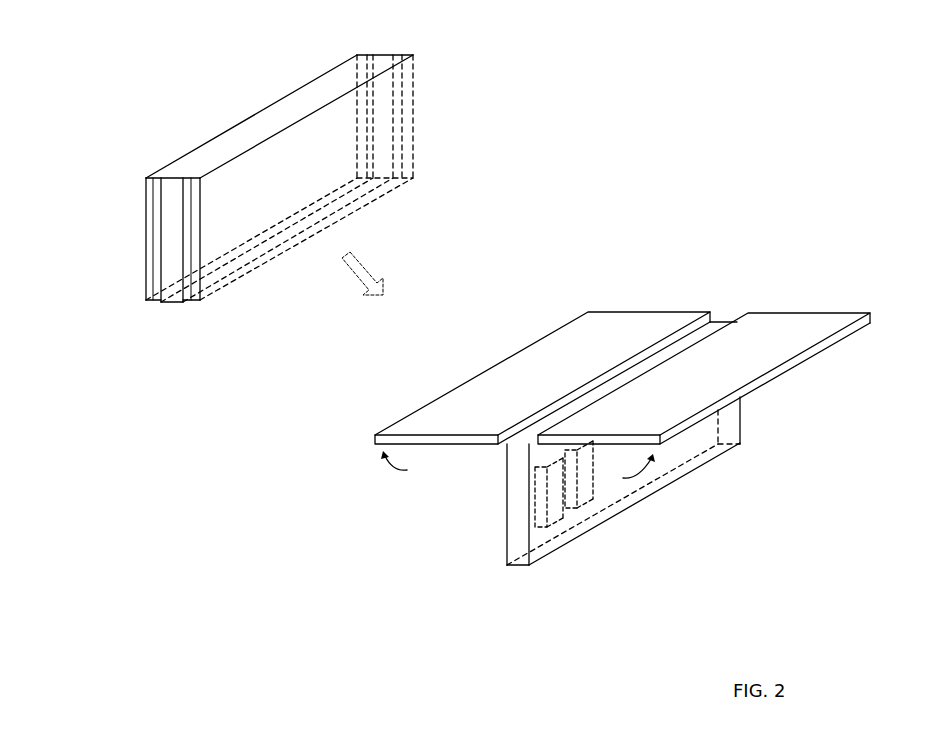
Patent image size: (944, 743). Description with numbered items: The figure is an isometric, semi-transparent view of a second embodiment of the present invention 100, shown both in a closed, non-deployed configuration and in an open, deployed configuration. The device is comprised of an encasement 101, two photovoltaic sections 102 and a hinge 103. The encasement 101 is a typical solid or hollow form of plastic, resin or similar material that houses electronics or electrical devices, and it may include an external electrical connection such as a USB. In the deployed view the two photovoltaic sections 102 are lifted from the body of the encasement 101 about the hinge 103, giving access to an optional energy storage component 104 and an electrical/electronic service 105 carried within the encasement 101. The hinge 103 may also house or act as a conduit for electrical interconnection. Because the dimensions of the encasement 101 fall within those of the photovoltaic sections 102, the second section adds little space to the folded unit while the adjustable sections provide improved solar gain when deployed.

The present invention 100 is at (125, 82).
The encasement 101 is at (170, 297).
The photovoltaic sections 102 is at (150, 298).
The hinge 103 is at (372, 80).
The energy storage component 104 is at (572, 525).
The electrical/electronic service 105 is at (587, 483).